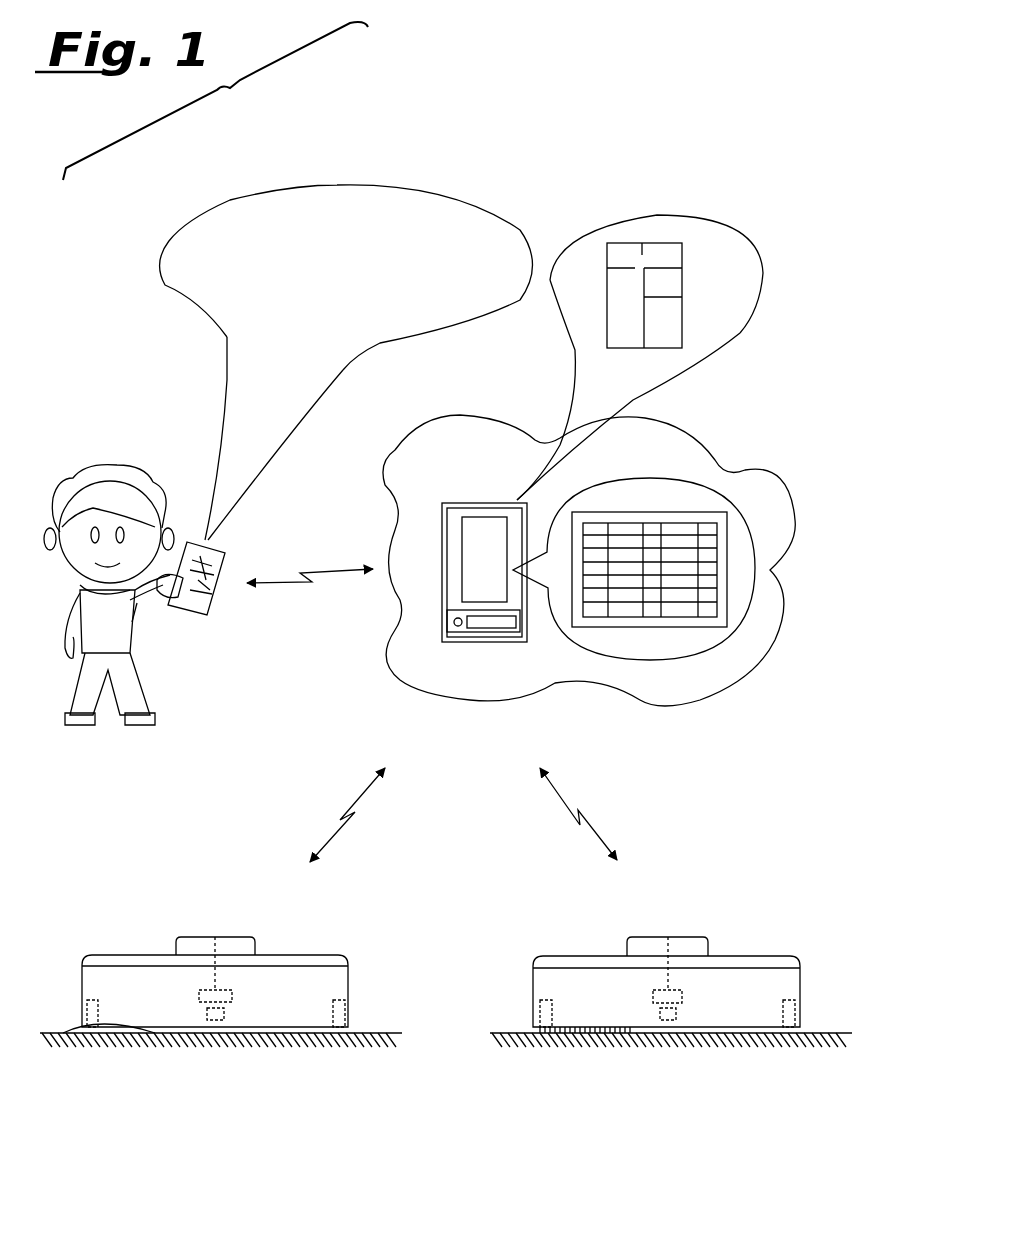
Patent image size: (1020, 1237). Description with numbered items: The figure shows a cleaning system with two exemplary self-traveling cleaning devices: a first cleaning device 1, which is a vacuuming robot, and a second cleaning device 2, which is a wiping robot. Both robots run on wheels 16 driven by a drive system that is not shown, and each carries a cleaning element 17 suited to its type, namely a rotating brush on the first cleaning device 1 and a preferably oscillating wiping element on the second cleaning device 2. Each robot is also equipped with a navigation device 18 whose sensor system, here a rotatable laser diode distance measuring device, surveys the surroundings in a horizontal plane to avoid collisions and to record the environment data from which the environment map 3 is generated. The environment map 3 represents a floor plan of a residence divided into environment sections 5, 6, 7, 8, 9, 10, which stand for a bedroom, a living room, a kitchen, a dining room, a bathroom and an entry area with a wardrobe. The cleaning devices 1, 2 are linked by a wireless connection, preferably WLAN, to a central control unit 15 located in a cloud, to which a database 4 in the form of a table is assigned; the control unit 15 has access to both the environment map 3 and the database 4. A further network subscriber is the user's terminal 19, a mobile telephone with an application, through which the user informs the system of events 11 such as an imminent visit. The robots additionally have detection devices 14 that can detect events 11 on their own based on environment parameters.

The first cleaning device 1 is at (429, 960).
The second cleaning device 2 is at (773, 933).
The environment map 3 is at (639, 304).
The database 4 is at (697, 557).
The environment section 5 is at (668, 312).
The environment section 6 is at (625, 322).
The environment section 7 is at (665, 282).
The environment section 8 is at (623, 285).
The environment section 9 is at (657, 250).
The environment section 10 is at (625, 252).
The event 11 is at (433, 162).
The detection device 14 is at (217, 1020).
The central control unit 15 is at (455, 518).
The wheel 16 is at (347, 1008).
The cleaning element 17 is at (80, 1030).
The navigation device 18 is at (207, 980).
The terminal 19 is at (225, 542).